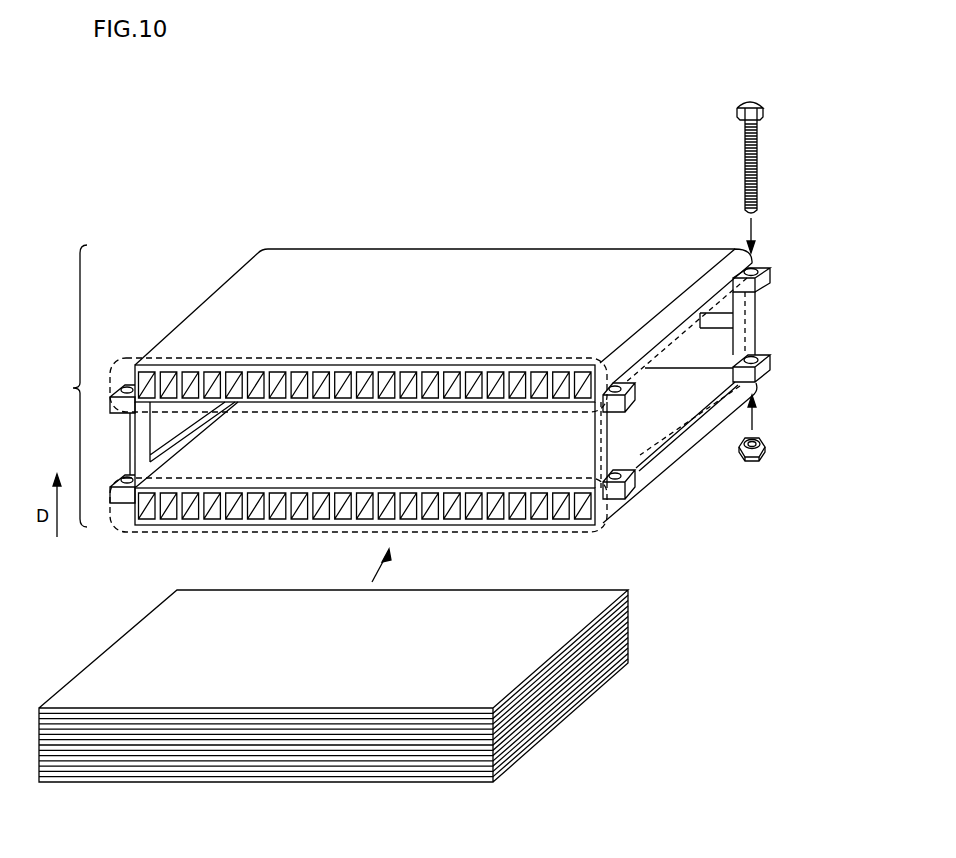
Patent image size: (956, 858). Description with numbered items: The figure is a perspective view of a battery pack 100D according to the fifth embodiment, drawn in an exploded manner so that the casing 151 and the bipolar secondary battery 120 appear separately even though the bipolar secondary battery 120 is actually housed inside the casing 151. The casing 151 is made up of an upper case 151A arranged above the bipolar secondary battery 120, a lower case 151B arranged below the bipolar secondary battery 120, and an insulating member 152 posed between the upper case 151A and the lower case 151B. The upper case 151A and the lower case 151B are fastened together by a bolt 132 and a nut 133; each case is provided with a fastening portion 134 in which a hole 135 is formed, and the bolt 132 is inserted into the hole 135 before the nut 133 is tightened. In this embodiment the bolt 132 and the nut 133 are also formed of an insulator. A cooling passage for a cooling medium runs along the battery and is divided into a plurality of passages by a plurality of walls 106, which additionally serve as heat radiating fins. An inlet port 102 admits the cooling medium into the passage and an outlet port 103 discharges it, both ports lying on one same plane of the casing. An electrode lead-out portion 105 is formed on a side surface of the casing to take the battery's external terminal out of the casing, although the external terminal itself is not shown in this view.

The battery pack 100D is at (768, 65).
The inlet port 102 is at (128, 358).
The outlet port 103 is at (131, 533).
The electrode lead-out portion 105 is at (652, 453).
The walls 106 is at (281, 378).
The bipolar secondary battery 120 is at (510, 607).
The bolt 132 is at (753, 103).
The nut 133 is at (766, 452).
The fastening portion 134 is at (766, 278).
The hole 135 is at (757, 270).
The casing 151 is at (63, 386).
The upper case 151A is at (612, 263).
The lower case 151B is at (690, 430).
The insulating member 152 is at (706, 310).